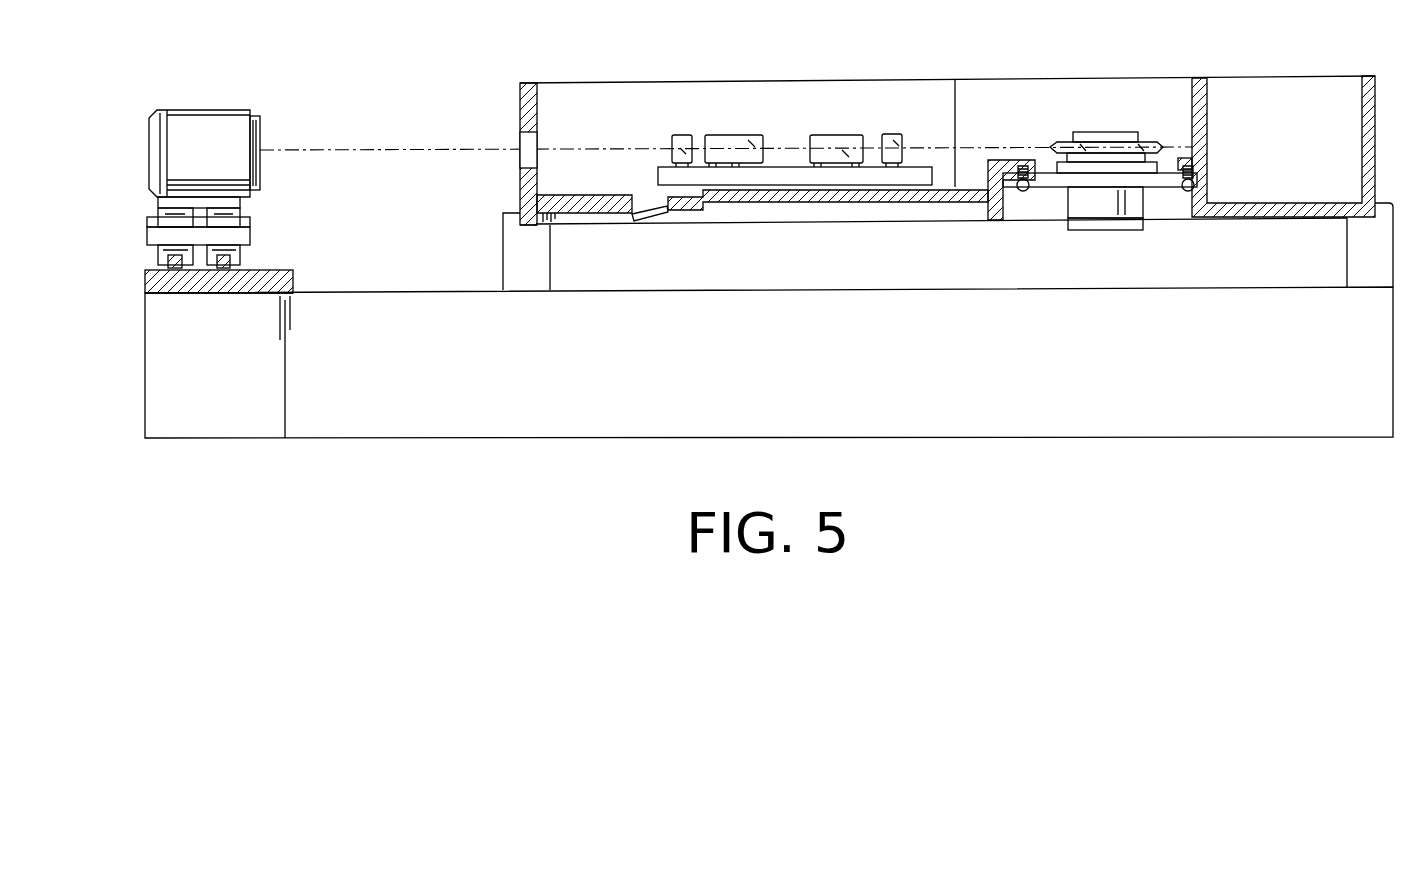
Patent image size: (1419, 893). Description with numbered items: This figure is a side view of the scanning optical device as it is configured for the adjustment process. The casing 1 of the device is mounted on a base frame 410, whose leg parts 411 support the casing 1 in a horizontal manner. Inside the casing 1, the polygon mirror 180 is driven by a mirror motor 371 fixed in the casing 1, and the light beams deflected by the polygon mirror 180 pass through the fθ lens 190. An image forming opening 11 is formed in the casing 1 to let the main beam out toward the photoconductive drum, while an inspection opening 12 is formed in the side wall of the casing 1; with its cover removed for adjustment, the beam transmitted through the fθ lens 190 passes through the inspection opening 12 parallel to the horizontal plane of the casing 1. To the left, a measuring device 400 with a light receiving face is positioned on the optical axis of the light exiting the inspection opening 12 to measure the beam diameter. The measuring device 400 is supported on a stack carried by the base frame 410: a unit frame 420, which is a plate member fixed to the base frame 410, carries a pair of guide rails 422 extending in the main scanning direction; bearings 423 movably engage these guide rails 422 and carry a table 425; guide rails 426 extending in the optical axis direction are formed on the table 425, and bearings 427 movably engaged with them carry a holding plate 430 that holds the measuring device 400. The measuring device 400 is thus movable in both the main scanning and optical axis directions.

The casing 1 is at (1375, 166).
The image forming opening 11 is at (633, 222).
The inspection opening 12 is at (524, 140).
The fθ lens 190 is at (786, 122).
The polygon mirror 180 is at (1118, 147).
The mirror motor 371 is at (1093, 212).
The base frame 410 is at (567, 418).
The leg parts 411 is at (512, 260).
The measuring device 400 is at (237, 90).
The bearings 427 is at (160, 202).
The holding plate 430 is at (233, 203).
The guide rails 426 is at (252, 220).
The table 425 is at (252, 240).
The bearings 423 is at (158, 248).
The guide rails 422 is at (150, 271).
The unit frame 420 is at (158, 293).